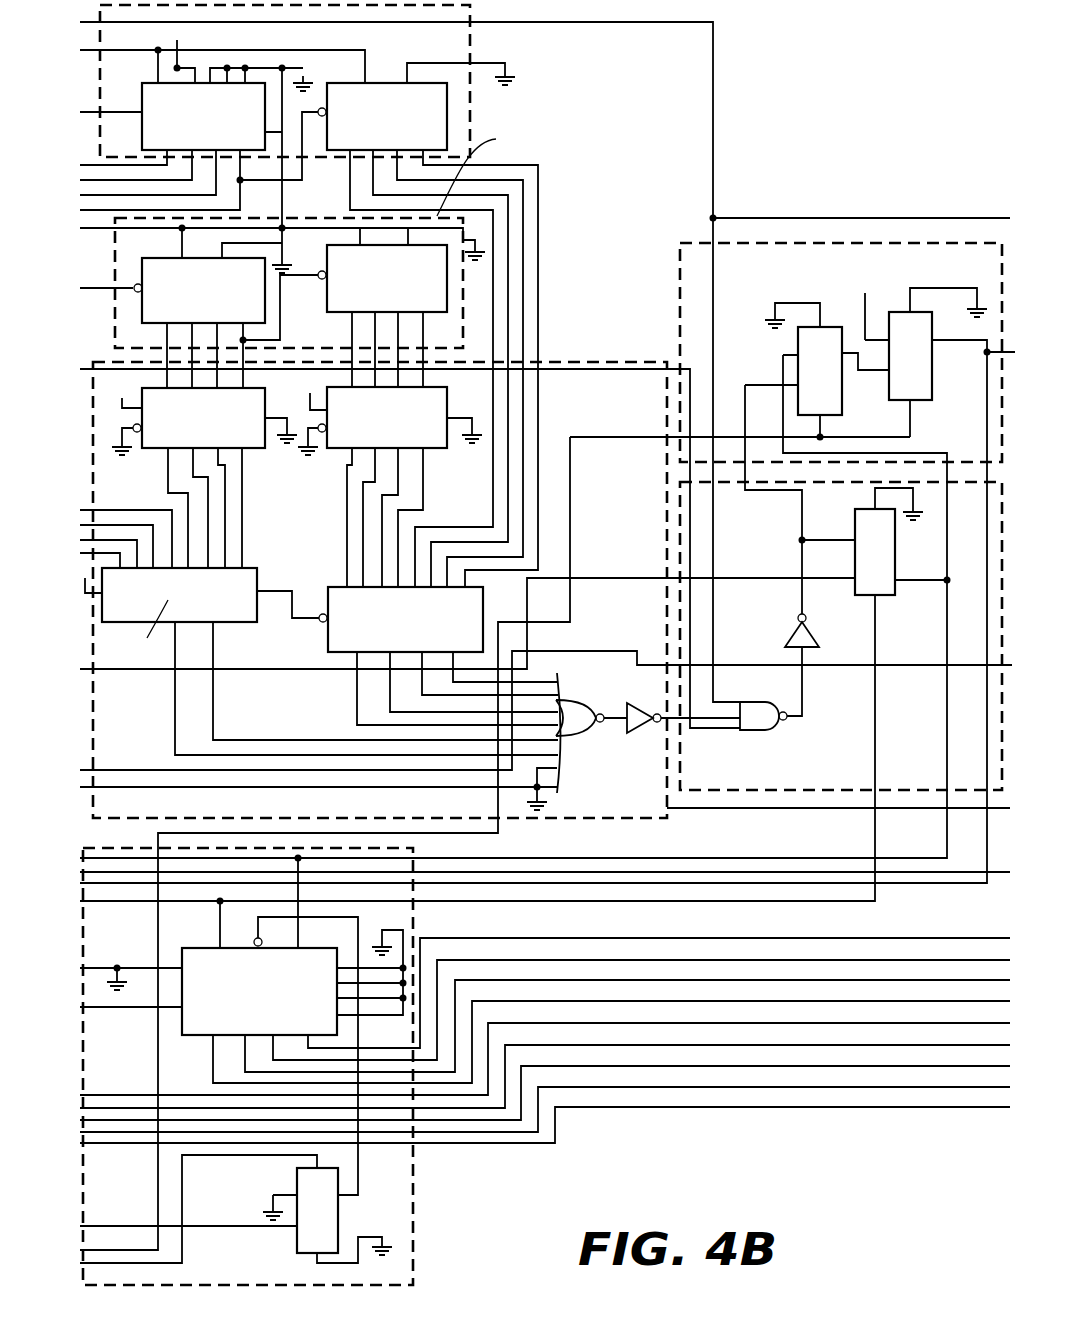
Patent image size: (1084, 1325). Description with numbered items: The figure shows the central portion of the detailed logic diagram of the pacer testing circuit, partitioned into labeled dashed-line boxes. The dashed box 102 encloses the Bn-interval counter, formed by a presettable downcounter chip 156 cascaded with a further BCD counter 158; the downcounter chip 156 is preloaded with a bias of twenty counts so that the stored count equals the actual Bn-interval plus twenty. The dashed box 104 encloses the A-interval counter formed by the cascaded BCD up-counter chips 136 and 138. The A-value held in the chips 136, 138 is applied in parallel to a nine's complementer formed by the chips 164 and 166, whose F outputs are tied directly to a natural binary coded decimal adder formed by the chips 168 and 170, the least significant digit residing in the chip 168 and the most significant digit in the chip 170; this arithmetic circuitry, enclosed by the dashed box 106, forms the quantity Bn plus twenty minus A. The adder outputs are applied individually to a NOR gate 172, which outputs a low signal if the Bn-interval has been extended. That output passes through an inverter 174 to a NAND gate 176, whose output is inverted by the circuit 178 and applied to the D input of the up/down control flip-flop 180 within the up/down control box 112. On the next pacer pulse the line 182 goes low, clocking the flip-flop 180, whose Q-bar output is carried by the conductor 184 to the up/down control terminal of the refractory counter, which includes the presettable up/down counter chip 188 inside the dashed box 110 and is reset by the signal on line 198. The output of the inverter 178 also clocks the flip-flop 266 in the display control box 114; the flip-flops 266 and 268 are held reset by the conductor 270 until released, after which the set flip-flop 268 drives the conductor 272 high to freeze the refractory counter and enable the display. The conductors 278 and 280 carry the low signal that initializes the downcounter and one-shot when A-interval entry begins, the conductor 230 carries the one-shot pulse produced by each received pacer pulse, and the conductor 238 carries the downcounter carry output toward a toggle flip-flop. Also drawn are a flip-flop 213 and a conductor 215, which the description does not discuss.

The dashed line box 102 is at (470, 36).
The dashed line box 104 is at (336, 220).
The dashed line box 106 is at (594, 362).
The dashed line box 110 is at (413, 920).
The dashed line box 112 is at (845, 792).
The dashed line box 114 is at (680, 259).
The BCD up-counter integrated circuit 136 is at (172, 263).
The BCD up-counter integrated circuit 138 is at (327, 266).
The presettable downcounter chip 156 is at (142, 86).
The BCD counter 158 is at (343, 84).
The nine's complementer integrated circuit chip 164 is at (140, 456).
The nine's complementer integrated circuit chip 166 is at (447, 452).
The NBCD adder integrated circuit 168 is at (290, 560).
The NBCD adder integrated circuit 170 is at (328, 645).
The NOR gate 172 is at (598, 696).
The inverter 174 is at (636, 735).
The NAND gate 176 is at (770, 703).
The inverter 178 is at (792, 631).
The Up/Down Control flip-flop 180 is at (855, 527).
The line 182 is at (757, 580).
The conductor 184 is at (947, 622).
The presettable up/down counter integrated circuit chip 188 is at (200, 948).
The line 198 is at (787, 900).
The flip-flop 213 is at (297, 1184).
The line 215 is at (358, 1170).
The conductor 230 is at (752, 812).
The conductor 238 is at (880, 1110).
The display control flip-flop 266 is at (798, 338).
The display control flip-flop 268 is at (932, 360).
The conductor 270 is at (158, 1052).
The conductor 272 is at (920, 885).
The conductor 278 is at (714, 52).
The conductor 280 is at (900, 216).